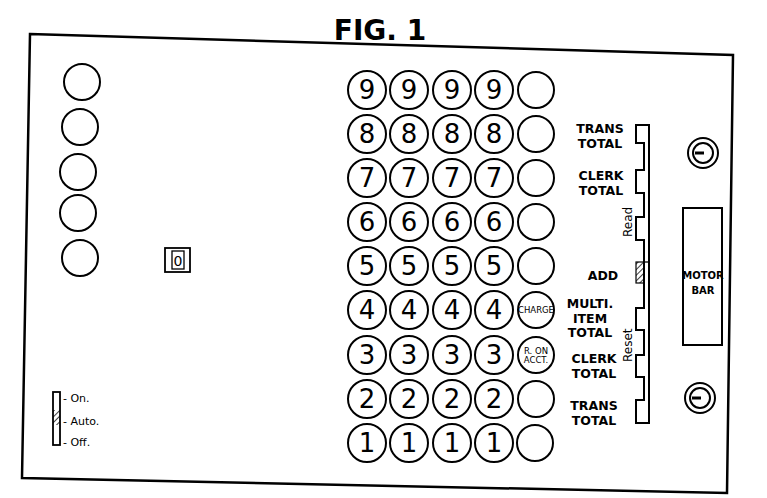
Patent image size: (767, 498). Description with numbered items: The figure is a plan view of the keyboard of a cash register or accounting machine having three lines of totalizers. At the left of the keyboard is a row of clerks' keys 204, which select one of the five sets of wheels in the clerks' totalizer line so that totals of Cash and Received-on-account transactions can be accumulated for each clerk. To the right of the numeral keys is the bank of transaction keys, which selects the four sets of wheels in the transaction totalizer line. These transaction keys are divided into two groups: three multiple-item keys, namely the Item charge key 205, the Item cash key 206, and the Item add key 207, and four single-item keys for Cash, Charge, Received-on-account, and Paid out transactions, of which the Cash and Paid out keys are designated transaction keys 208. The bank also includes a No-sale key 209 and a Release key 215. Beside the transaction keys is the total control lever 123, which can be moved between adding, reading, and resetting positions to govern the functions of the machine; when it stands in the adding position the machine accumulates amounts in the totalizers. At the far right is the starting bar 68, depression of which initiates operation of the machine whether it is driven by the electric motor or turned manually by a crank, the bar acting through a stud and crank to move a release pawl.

The clerks' keys 204 is at (97, 88).
The Item charge key 205 is at (549, 80).
The Item cash key 206 is at (548, 123).
The Item add key 207 is at (551, 190).
The Release key 215 is at (553, 234).
The transaction key 208 is at (550, 264).
The No-sale key 209 is at (552, 451).
The total control lever 123 is at (640, 264).
The starting bar 68 is at (705, 212).